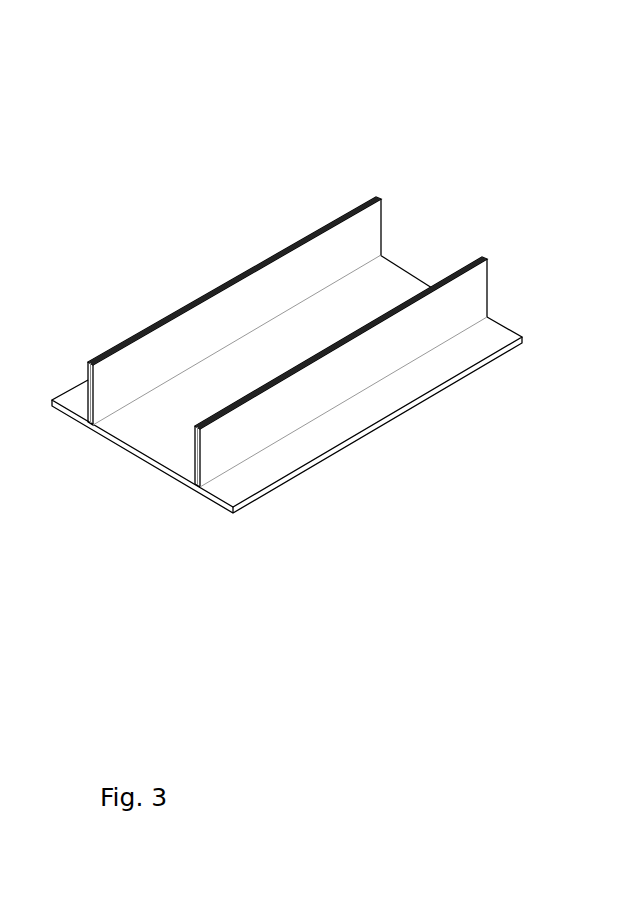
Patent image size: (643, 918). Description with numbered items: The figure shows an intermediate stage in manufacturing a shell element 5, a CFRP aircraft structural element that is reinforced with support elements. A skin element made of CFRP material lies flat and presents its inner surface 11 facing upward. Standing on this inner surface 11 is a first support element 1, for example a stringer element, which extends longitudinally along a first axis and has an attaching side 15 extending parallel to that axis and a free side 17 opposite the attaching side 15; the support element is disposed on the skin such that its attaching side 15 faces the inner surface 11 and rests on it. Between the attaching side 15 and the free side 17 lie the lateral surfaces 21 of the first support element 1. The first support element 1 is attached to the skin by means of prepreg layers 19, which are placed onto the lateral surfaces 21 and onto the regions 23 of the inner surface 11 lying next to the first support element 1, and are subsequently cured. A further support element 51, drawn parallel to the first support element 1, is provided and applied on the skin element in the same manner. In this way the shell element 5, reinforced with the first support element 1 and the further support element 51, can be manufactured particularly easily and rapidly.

The shell element 5 is at (248, 152).
The first support element 1 is at (299, 382).
The inner surface 11 is at (249, 246).
The further support elements 51 is at (197, 320).
The lateral surfaces 21 is at (370, 412).
The free side 17 is at (350, 337).
The attaching side 15 is at (410, 362).
The prepreg layers 19 is at (123, 383).
The regions 23 is at (303, 435).